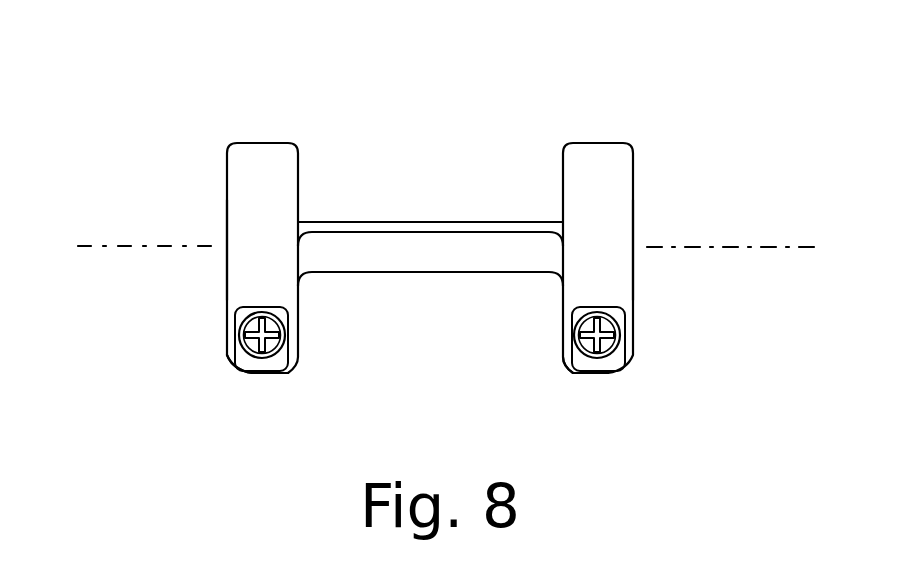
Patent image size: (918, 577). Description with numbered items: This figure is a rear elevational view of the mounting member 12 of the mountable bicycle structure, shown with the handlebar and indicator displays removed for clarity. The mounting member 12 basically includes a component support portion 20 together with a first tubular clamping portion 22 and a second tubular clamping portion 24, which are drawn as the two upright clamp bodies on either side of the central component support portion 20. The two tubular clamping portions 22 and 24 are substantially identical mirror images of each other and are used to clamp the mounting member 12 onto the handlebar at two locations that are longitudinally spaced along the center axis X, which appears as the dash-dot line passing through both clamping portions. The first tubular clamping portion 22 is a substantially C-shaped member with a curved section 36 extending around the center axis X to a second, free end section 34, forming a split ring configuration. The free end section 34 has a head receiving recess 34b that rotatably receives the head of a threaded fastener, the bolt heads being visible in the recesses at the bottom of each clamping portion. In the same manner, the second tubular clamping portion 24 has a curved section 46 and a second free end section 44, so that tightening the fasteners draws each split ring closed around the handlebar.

The mounting member 12 is at (656, 126).
The component support portion 20 is at (408, 218).
The first tubular clamping portion 22 is at (246, 136).
The second tubular clamping portion 24 is at (604, 138).
The second end section 34 is at (229, 363).
The head receiving recess 34b is at (237, 308).
The curved section 36 is at (227, 158).
The second end section 44 is at (570, 373).
The curved section 46 is at (634, 163).
The center axis X is at (130, 248).